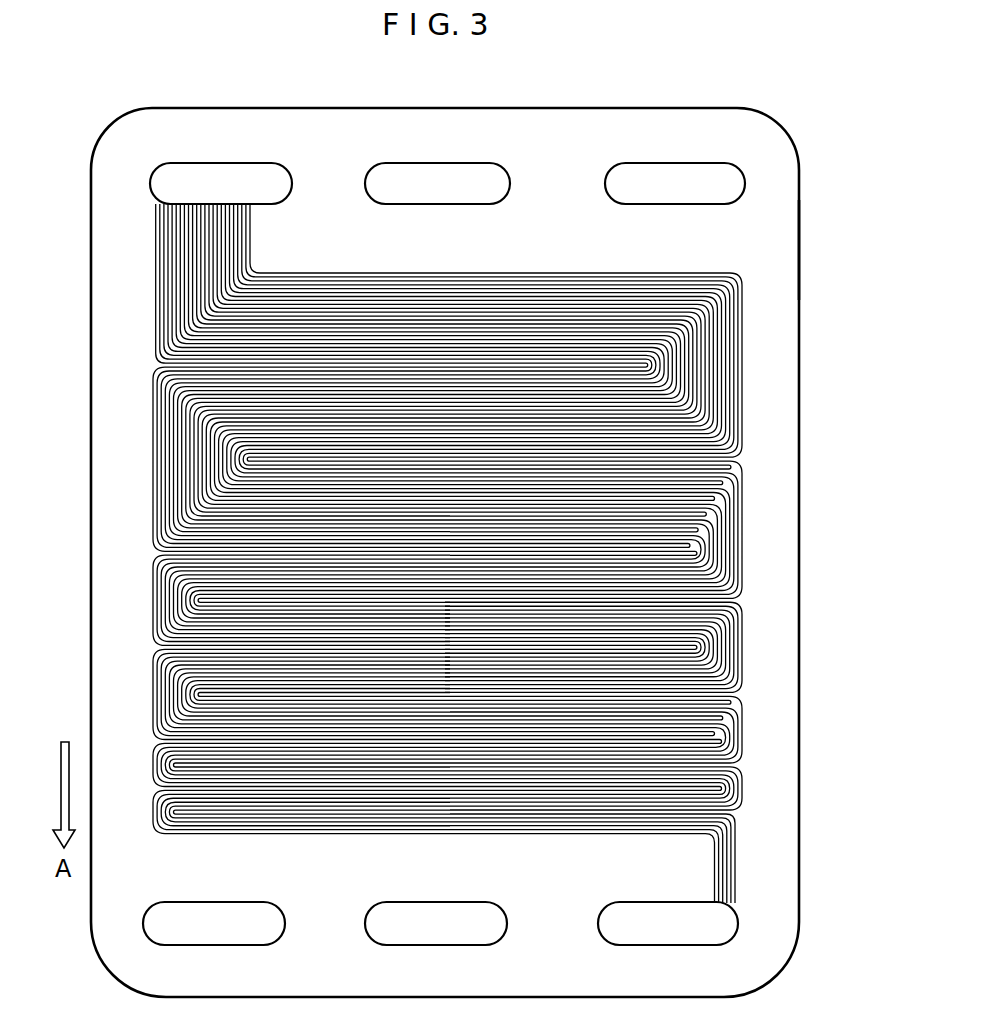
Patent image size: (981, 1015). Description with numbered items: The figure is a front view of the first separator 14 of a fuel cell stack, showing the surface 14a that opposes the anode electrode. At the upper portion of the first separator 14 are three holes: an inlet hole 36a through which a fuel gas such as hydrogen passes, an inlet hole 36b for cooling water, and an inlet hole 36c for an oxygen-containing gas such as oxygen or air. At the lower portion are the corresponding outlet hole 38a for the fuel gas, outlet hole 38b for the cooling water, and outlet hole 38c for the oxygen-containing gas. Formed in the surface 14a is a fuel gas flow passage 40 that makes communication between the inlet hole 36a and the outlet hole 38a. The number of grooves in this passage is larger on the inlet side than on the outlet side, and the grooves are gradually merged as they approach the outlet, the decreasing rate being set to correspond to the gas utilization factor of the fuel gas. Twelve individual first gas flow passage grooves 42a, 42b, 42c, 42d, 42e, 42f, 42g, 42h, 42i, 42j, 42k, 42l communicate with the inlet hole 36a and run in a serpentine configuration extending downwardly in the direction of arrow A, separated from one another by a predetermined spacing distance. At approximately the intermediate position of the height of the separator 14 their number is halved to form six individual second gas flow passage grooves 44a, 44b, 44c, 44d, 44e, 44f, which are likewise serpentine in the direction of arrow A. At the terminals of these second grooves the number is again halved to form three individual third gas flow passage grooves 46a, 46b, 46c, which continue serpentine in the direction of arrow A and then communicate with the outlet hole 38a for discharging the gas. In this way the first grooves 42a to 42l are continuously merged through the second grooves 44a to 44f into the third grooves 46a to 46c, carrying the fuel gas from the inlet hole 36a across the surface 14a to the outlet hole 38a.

The first separator 14 is at (599, 100).
The surface 14a is at (767, 248).
The inlet hole 36a is at (205, 183).
The inlet hole 36b is at (428, 183).
The inlet hole 36c is at (665, 183).
The outlet hole 38a is at (643, 928).
The outlet hole 38b is at (421, 928).
The outlet hole 38c is at (200, 928).
The fuel gas flow passage 40 is at (330, 262).
The first gas flow passage groove 42a is at (738, 298).
The first gas flow passage groove 42b is at (735, 325).
The first gas flow passage groove 42c is at (727, 350).
The first gas flow passage groove 42d is at (718, 378).
The first gas flow passage groove 42e is at (708, 408).
The first gas flow passage groove 42f is at (593, 313).
The first gas flow passage groove 42g is at (560, 322).
The first gas flow passage groove 42h is at (527, 330).
The first gas flow passage groove 42i is at (497, 338).
The first gas flow passage groove 42j is at (463, 347).
The first gas flow passage groove 42k is at (430, 357).
The first gas flow passage groove 42l is at (393, 357).
The second gas flow passage groove 44a is at (158, 556).
The second gas flow passage groove 44b is at (162, 578).
The second gas flow passage groove 44c is at (174, 598).
The second gas flow passage groove 44d is at (181, 608).
The second gas flow passage groove 44e is at (168, 621).
The second gas flow passage groove 44f is at (197, 604).
The third gas flow passage groove 46a is at (725, 772).
The third gas flow passage groove 46b is at (716, 790).
The third gas flow passage groove 46c is at (736, 809).